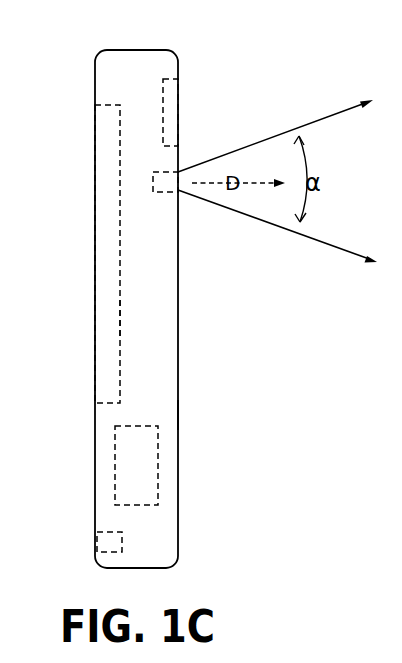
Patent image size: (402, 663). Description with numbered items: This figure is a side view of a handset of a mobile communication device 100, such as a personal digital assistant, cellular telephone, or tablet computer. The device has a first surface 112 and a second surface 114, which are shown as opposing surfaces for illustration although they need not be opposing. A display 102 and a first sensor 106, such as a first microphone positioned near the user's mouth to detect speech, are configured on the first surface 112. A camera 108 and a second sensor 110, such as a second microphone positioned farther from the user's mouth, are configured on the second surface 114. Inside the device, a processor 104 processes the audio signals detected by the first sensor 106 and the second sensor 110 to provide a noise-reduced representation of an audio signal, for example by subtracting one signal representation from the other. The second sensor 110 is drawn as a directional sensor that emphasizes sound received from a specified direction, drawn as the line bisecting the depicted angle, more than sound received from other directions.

The mobile communication device 100 is at (213, 76).
The display 102 is at (117, 320).
The processor 104 is at (158, 465).
The first sensor 106 is at (97, 540).
The camera 108 is at (178, 104).
The second sensor 110 is at (165, 193).
The first surface 112 is at (95, 422).
The second surface 114 is at (178, 415).